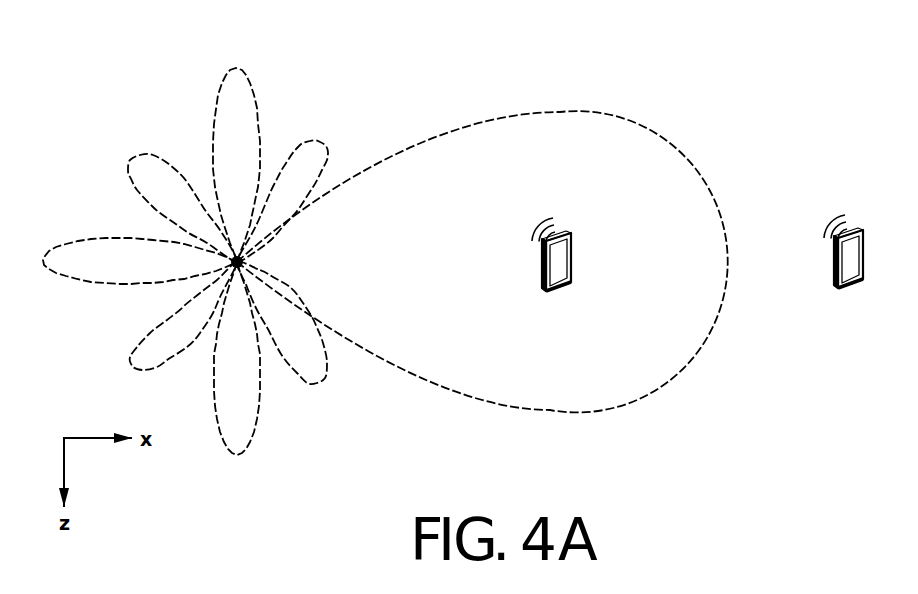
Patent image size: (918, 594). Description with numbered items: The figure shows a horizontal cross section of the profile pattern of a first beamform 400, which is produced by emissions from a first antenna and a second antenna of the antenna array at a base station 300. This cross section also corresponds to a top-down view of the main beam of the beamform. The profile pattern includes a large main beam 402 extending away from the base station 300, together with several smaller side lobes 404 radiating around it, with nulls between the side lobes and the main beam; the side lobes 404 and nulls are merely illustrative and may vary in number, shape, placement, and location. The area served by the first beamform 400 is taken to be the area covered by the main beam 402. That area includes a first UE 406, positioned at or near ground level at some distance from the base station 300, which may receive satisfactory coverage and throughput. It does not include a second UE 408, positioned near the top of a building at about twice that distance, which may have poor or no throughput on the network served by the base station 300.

The first beamform 400 is at (322, 60).
The base station 300 is at (243, 263).
The main beam 402 is at (575, 140).
The side lobes 404 is at (137, 337).
The first UE 406 is at (543, 262).
The second UE 408 is at (835, 265).